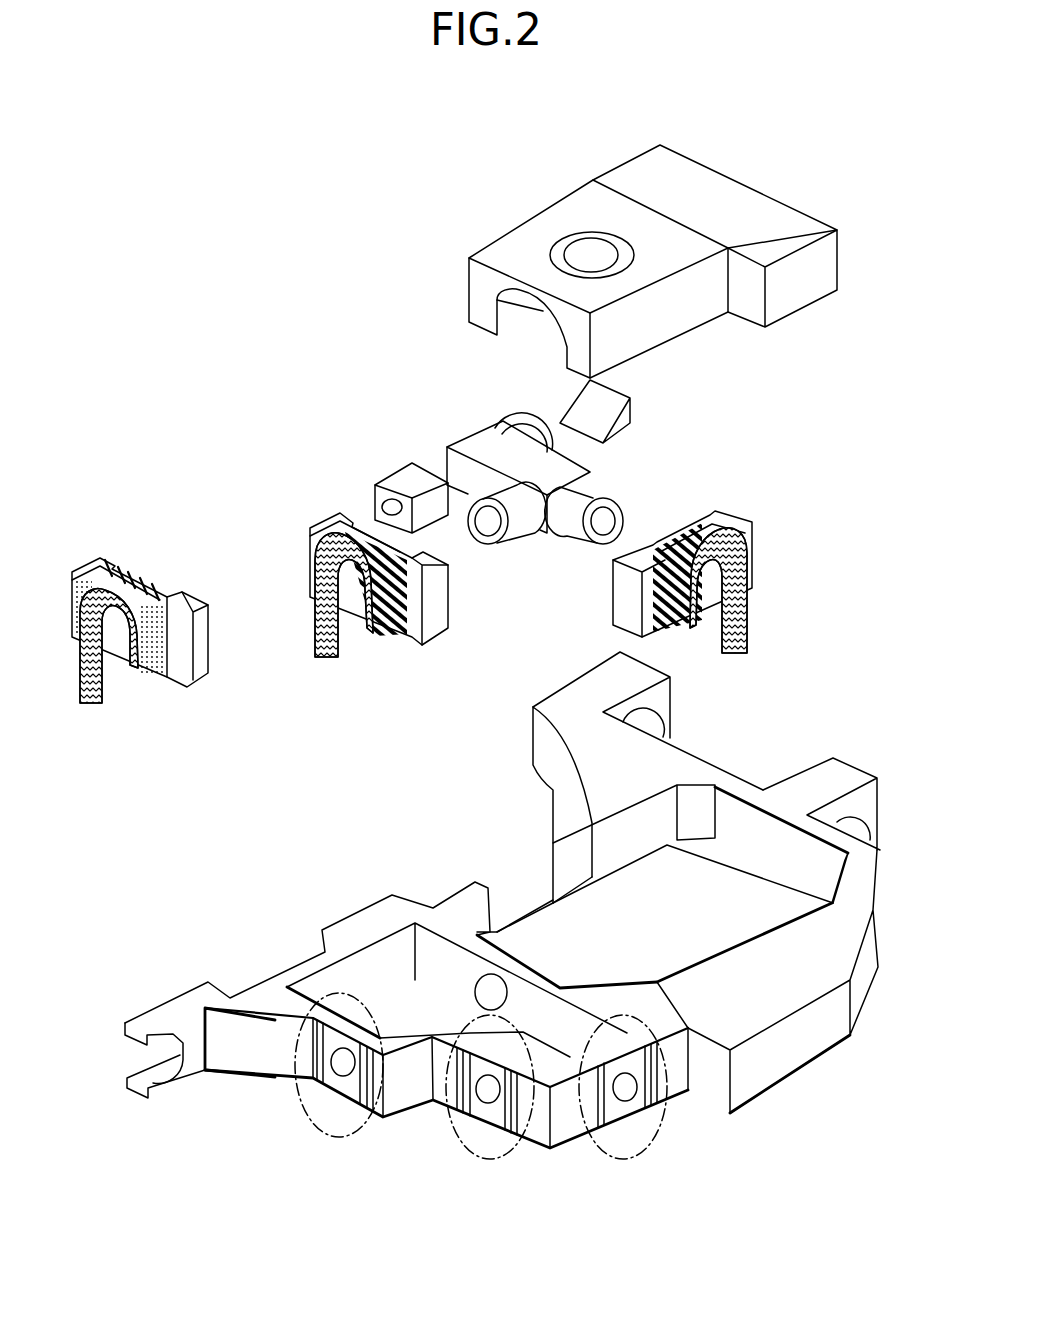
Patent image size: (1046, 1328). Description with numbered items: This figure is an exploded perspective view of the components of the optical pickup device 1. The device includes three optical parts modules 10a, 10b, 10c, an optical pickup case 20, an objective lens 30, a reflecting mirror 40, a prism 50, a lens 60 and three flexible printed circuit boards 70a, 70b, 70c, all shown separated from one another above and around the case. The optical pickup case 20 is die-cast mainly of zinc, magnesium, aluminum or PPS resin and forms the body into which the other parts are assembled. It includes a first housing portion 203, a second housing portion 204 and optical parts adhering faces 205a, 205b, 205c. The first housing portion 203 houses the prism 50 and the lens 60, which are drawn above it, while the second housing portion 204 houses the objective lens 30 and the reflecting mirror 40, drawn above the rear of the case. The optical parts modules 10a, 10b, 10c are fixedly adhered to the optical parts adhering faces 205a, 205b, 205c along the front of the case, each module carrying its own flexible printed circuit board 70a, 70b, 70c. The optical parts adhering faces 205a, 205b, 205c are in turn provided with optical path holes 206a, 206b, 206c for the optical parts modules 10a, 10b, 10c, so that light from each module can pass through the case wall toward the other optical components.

The optical pickup device 1 is at (354, 231).
The optical pickup case 20 is at (502, 942).
The objective lens 30 is at (572, 250).
The reflecting mirror 40 is at (631, 408).
The prism 50 is at (465, 436).
The lens 60 is at (393, 471).
The optical parts module 10a is at (120, 622).
The optical parts module 10b is at (346, 584).
The optical parts module 10c is at (716, 585).
The flexible printed circuit board 70a is at (89, 686).
The flexible printed circuit board 70b is at (331, 648).
The flexible printed circuit board 70c is at (747, 648).
The first housing portion 203 is at (311, 972).
The second housing portion 204 is at (555, 842).
The optical parts adhering face 205a is at (326, 1136).
The optical parts adhering face 205b is at (483, 1162).
The optical parts adhering face 205c is at (629, 1156).
The optical path hole 206a is at (328, 1082).
The optical path hole 206b is at (470, 1120).
The optical path hole 206c is at (647, 1125).